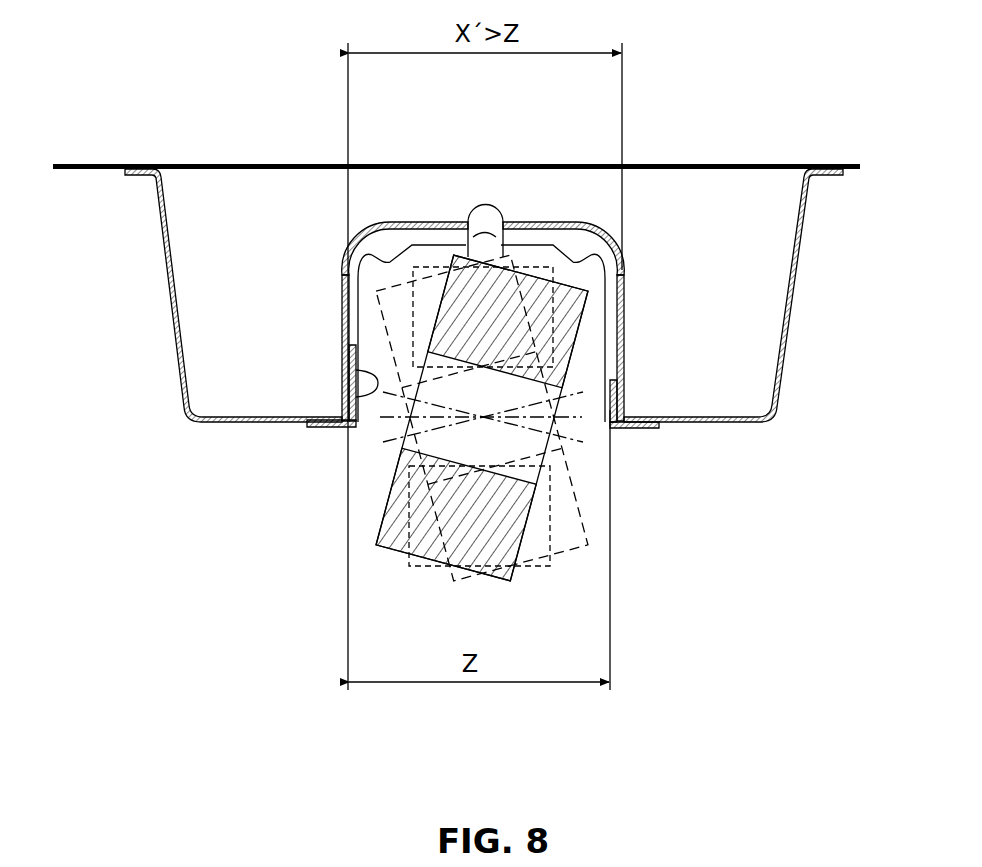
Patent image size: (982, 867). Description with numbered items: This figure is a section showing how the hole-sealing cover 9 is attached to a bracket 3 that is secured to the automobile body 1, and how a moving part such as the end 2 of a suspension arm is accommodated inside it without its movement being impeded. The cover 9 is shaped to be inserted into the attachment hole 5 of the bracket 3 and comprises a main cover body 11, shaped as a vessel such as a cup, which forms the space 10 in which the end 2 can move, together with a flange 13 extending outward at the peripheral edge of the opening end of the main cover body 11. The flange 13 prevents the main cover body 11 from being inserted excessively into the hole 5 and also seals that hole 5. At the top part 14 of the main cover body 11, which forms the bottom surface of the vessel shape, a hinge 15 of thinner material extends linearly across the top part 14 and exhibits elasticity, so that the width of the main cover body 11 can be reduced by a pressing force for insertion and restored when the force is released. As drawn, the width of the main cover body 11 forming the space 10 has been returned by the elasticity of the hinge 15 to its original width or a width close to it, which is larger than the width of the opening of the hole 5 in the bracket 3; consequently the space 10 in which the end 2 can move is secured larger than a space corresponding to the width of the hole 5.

The automobile body 1 is at (701, 164).
The end of suspension arm 2 is at (395, 533).
The bracket 3 is at (178, 293).
The attachment hole 5 is at (349, 373).
The hole-sealing cover 9 is at (480, 294).
The space 10 is at (359, 288).
The main cover body 11 is at (336, 282).
The flange 13 is at (315, 427).
The top part 14 is at (533, 222).
The hinge 15 is at (482, 205).